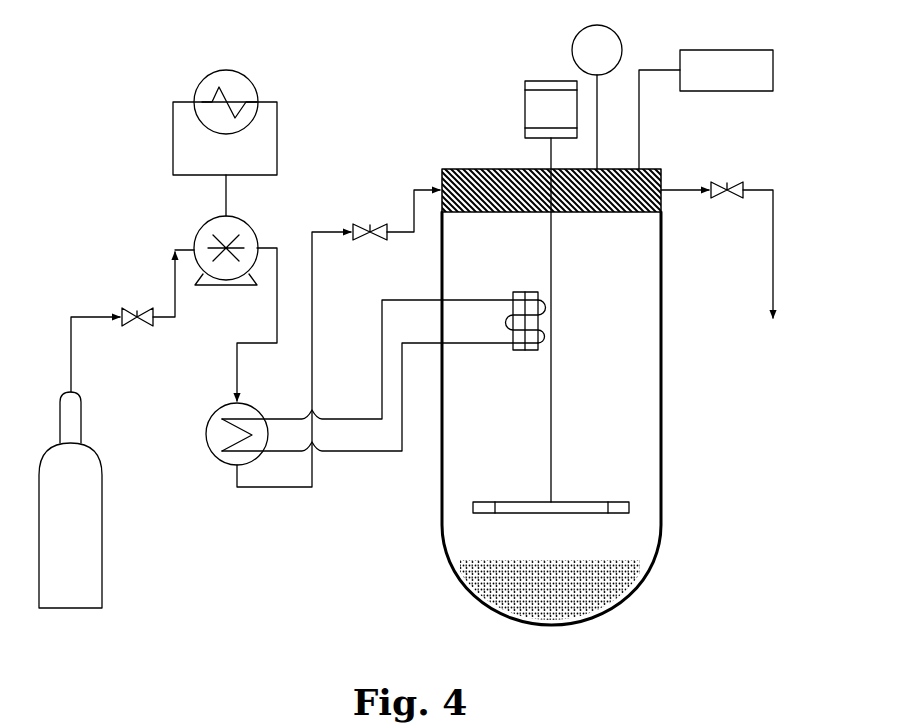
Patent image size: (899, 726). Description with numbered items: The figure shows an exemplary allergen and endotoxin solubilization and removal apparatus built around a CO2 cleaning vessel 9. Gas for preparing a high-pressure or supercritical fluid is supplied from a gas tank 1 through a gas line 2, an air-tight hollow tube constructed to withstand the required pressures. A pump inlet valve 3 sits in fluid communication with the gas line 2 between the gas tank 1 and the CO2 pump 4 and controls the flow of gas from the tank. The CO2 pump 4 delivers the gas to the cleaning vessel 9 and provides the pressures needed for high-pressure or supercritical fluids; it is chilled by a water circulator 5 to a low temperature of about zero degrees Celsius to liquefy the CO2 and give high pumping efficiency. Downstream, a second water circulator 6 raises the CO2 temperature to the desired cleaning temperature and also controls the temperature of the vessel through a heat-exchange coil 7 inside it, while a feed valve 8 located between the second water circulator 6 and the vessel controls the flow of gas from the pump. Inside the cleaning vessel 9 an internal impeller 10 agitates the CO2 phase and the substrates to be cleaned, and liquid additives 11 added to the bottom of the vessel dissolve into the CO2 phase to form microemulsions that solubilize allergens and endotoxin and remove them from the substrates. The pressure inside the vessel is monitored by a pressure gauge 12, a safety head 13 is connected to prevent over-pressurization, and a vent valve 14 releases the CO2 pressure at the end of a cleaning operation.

The gas tank 1 is at (74, 610).
The gas line 2 is at (75, 361).
The pump inlet valve 3 is at (128, 306).
The CO2 pump 4 is at (226, 290).
The water circulator 5 is at (230, 69).
The second water circulator 6 is at (204, 439).
The heat-exchange coil 7 is at (503, 349).
The feed valve 8 is at (369, 246).
The CO2 cleaning vessel 9 is at (439, 424).
The internal impeller 10 is at (553, 515).
The liquid additives 11 is at (558, 601).
The pressure gauge 12 is at (573, 48).
The safety head 13 is at (776, 73).
The vent valve 14 is at (727, 200).